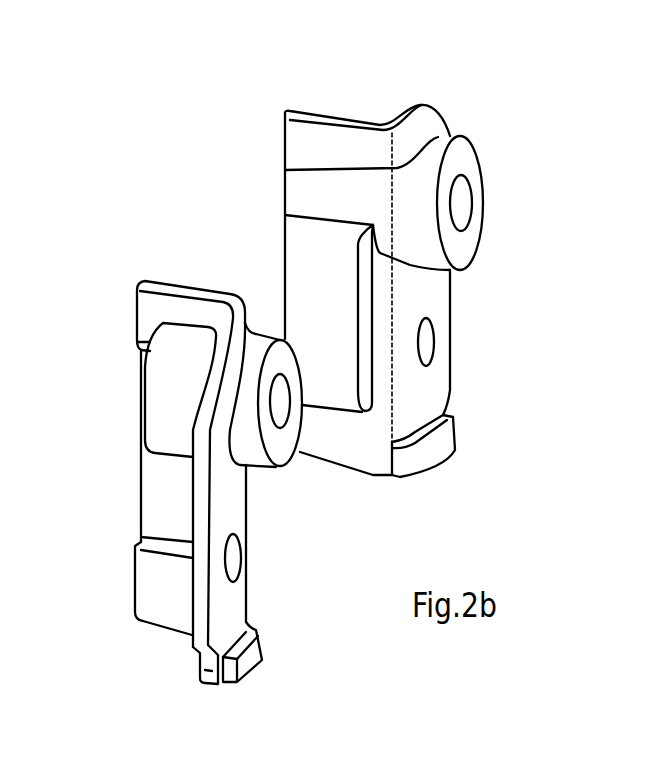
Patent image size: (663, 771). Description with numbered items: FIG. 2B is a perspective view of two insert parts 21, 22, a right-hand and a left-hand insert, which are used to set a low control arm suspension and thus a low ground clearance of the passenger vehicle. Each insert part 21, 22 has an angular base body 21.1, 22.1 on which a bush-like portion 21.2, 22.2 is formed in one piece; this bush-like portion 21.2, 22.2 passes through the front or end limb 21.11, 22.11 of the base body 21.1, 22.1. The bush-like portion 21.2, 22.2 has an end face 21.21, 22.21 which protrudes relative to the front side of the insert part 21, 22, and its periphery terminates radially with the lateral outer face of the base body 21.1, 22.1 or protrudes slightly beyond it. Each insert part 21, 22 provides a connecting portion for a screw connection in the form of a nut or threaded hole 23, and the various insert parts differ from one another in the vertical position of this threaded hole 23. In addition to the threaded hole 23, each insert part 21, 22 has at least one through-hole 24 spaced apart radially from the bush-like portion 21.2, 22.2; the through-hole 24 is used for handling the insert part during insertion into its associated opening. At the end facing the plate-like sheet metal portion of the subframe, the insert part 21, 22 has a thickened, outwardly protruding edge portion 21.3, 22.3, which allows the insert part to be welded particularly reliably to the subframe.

The insert part 21 is at (117, 268).
The angular base body 21.1 is at (158, 587).
The front or end limb 21.11 is at (202, 492).
The bush-like portion 21.2 is at (158, 407).
The end face 21.21 is at (275, 448).
The edge portion 21.3 is at (248, 662).
The insert part 22 is at (431, 86).
The angular base body 22.1 is at (305, 143).
The front or end limb 22.11 is at (433, 382).
The bush-like portion 22.2 is at (445, 147).
The end face 22.21 is at (465, 163).
The edge portion 22.3 is at (440, 447).
The threaded hole 23 is at (460, 212).
The through-hole 24 is at (430, 342).